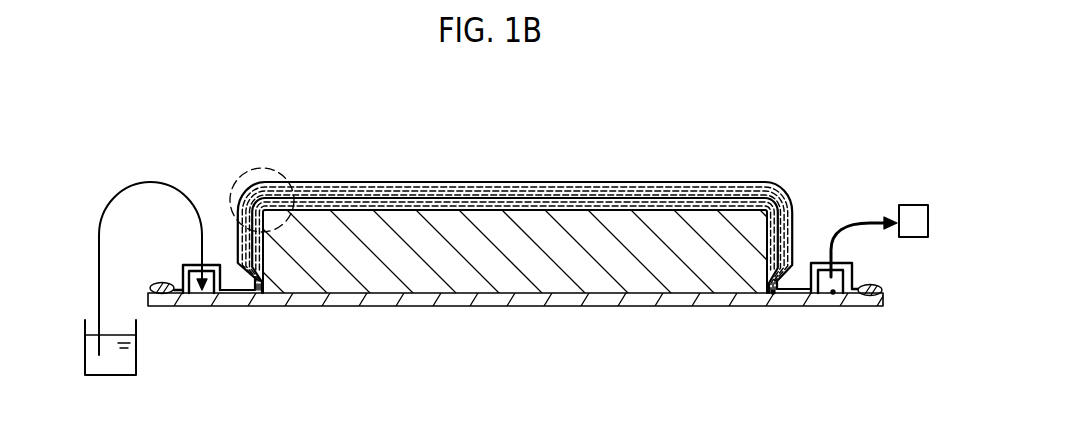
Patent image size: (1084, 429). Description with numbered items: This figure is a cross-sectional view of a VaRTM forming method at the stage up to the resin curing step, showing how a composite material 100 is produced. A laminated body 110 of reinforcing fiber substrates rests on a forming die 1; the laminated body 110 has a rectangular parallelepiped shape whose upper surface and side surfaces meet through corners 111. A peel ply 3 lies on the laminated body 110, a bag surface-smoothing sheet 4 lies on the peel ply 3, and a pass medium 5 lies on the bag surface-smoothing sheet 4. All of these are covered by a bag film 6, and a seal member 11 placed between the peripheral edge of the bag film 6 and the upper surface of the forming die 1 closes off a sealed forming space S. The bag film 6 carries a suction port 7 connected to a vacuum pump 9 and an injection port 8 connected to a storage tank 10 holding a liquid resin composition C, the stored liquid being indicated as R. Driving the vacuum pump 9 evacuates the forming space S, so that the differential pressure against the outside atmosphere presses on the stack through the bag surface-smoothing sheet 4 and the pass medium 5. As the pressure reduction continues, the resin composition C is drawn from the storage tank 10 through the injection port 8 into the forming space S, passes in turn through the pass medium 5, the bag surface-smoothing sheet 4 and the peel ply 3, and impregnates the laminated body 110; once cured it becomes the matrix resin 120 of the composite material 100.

The forming die 1 is at (518, 296).
The peel ply 3 is at (660, 196).
The bag surface-smoothing sheet 4 is at (593, 191).
The pass medium 5 is at (503, 188).
The bag film 6 is at (445, 182).
The suction port 7 is at (845, 295).
The injection port 8 is at (195, 291).
The vacuum pump 9 is at (911, 205).
The storage tank 10 is at (137, 360).
The seal member 11 is at (160, 283).
The composite material 100 is at (433, 135).
The laminated body 110 is at (277, 198).
The matrix resin 120 is at (353, 205).
The resin composition C is at (514, 204).
The corner 111 is at (270, 178).
The forming space S is at (705, 205).
The liquid R is at (93, 342).